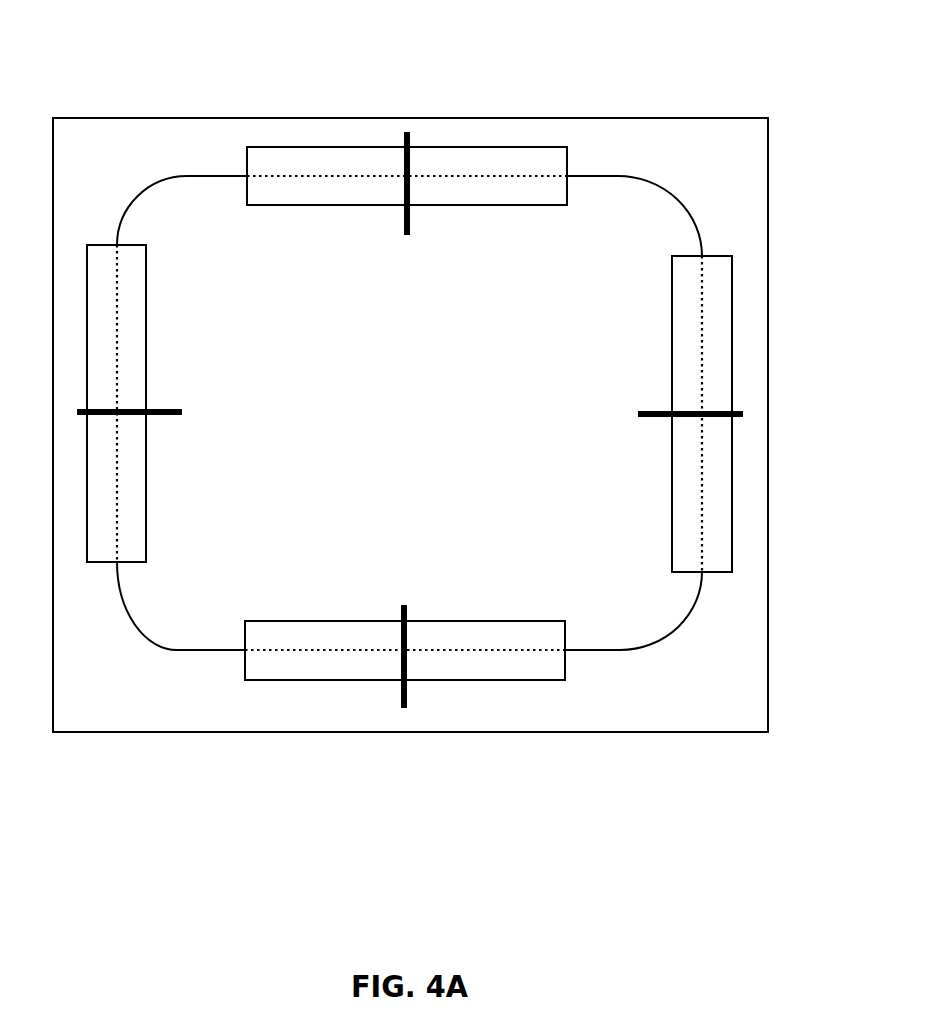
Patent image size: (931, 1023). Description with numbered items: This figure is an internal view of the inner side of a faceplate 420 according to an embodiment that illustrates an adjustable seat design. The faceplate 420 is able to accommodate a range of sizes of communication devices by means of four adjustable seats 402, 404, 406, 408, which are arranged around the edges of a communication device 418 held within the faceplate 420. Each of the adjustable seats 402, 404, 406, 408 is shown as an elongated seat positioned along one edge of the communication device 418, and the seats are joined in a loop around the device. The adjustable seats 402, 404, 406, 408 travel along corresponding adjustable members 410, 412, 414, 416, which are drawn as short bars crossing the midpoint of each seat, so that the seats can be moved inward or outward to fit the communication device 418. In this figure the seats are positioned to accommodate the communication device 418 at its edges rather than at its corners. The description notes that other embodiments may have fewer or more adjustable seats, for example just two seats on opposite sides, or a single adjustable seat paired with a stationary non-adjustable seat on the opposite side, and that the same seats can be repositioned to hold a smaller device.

The adjustable seat 402 is at (275, 165).
The adjustable seat 404 is at (130, 373).
The adjustable seat 406 is at (275, 638).
The adjustable seat 408 is at (692, 535).
The adjustable member 410 is at (410, 130).
The adjustable member 412 is at (170, 417).
The adjustable member 414 is at (405, 600).
The adjustable member 416 is at (662, 412).
The communication device 418 is at (424, 403).
The faceplate 420 is at (135, 135).